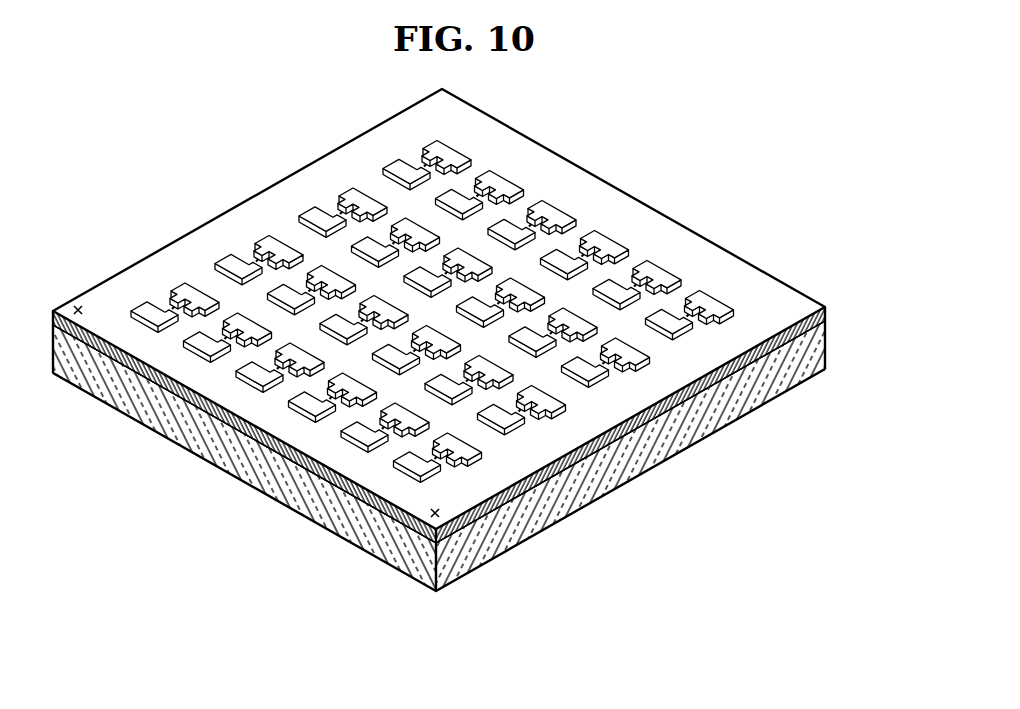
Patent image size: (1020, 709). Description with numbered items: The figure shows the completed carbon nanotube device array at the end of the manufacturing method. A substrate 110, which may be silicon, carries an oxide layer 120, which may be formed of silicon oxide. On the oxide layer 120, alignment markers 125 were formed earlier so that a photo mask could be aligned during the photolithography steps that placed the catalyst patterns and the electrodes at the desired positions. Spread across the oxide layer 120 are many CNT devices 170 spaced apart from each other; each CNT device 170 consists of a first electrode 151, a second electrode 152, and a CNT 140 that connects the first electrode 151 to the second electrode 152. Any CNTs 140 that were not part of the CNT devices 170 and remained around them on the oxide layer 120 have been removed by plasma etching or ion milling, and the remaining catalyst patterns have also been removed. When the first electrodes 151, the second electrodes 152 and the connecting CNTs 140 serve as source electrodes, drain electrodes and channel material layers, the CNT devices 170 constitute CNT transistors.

The substrate 110 is at (828, 355).
The oxide layer 120 is at (828, 317).
The alignment markers 125 is at (81, 305).
The CNTs 140 is at (606, 363).
The first electrodes 151 is at (600, 381).
The second electrodes 152 is at (641, 368).
The CNT devices 170 is at (808, 449).